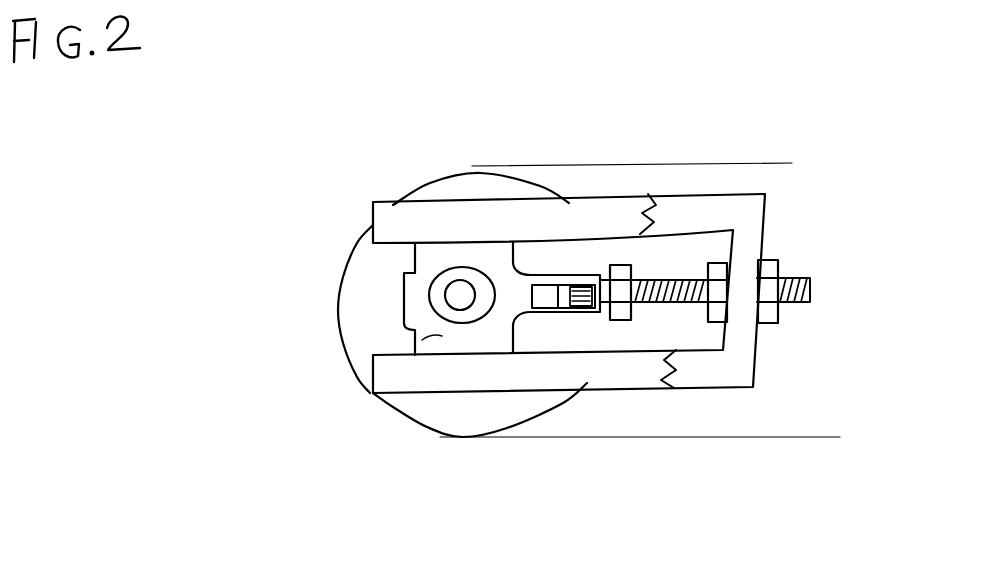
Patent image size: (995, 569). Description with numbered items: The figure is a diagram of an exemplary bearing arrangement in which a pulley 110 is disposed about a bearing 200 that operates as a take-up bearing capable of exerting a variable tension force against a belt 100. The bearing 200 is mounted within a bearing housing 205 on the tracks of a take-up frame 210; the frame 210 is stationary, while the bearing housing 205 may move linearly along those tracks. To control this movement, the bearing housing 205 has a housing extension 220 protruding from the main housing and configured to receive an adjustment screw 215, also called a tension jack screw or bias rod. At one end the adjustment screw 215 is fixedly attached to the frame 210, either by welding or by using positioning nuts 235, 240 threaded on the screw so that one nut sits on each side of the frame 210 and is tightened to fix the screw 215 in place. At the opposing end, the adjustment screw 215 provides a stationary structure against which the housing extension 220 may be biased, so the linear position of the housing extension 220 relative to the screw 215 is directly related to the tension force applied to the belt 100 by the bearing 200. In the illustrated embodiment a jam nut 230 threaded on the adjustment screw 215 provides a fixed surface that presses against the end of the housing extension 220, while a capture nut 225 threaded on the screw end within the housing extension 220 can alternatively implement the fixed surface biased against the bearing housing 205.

The belt 100 is at (658, 163).
The pulley 110 is at (363, 250).
The bearing 200 is at (440, 292).
The bearing housing 205 is at (293, 402).
The take-up frame 210 is at (743, 213).
The adjustment screw 215 is at (810, 281).
The housing extension 220 is at (552, 278).
The capture nut 225 is at (567, 308).
The jam nut 230 is at (627, 307).
The positioning nut 235 is at (712, 322).
The positioning nut 240 is at (775, 323).